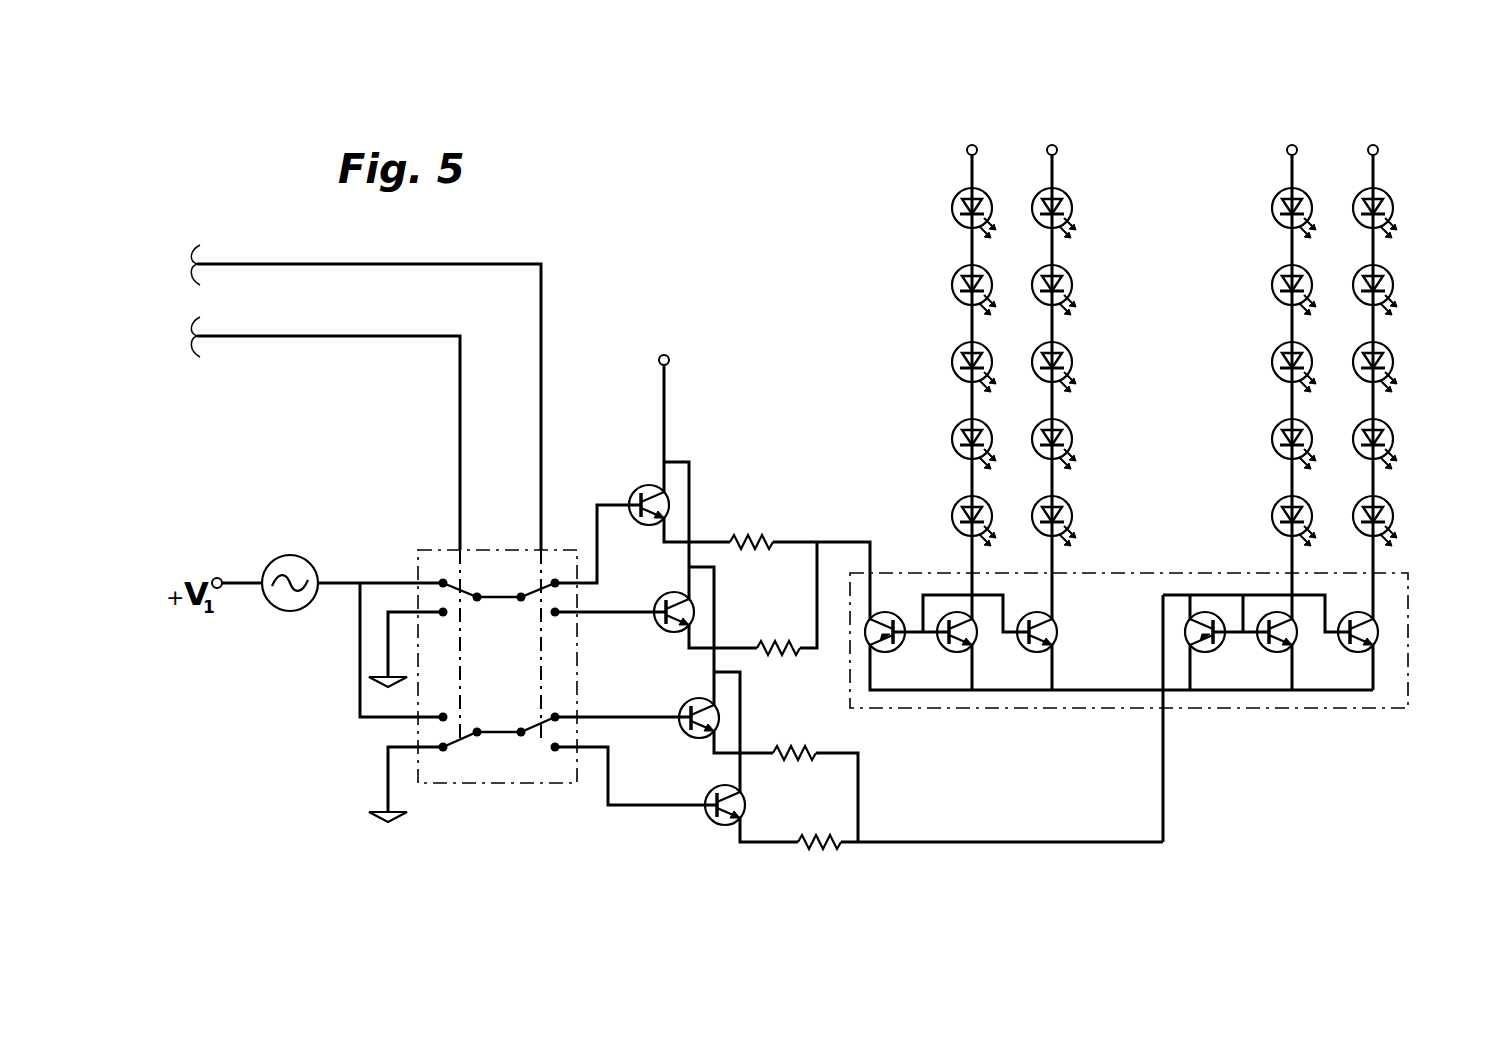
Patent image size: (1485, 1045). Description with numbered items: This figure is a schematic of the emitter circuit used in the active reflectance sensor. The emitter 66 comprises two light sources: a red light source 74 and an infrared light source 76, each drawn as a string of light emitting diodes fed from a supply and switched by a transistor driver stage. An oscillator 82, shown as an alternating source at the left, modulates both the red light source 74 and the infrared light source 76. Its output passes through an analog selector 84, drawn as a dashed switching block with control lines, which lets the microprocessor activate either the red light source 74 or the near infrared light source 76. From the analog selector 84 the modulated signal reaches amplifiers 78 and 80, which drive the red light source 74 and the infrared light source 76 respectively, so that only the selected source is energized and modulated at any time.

The emitter 66 is at (1405, 145).
The red light source 74 is at (954, 200).
The infrared light source 76 is at (1392, 196).
The amplifier 78 is at (706, 512).
The amplifier 80 is at (745, 790).
The oscillator 82 is at (292, 555).
The analog selector 84 is at (482, 784).